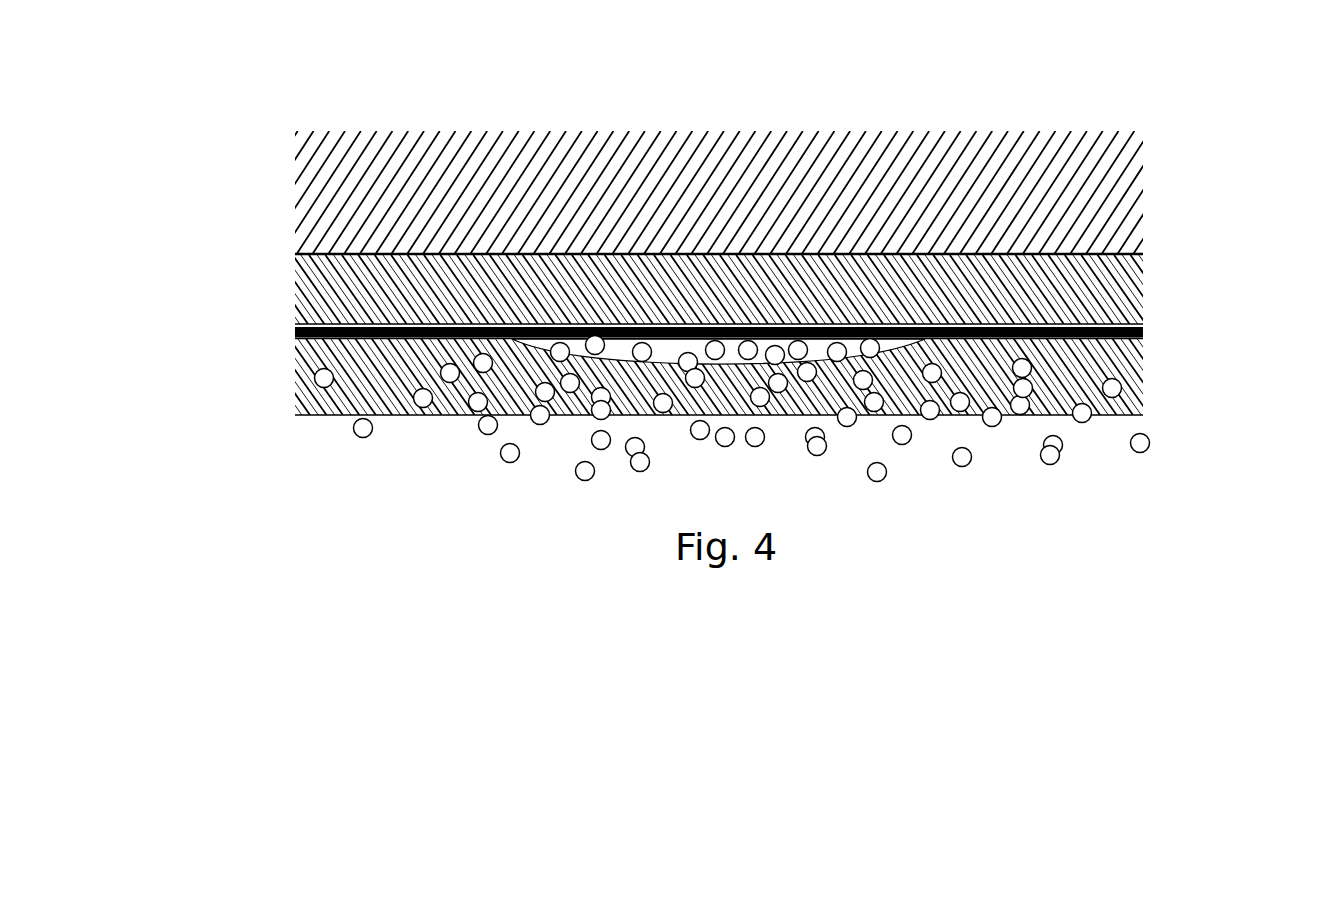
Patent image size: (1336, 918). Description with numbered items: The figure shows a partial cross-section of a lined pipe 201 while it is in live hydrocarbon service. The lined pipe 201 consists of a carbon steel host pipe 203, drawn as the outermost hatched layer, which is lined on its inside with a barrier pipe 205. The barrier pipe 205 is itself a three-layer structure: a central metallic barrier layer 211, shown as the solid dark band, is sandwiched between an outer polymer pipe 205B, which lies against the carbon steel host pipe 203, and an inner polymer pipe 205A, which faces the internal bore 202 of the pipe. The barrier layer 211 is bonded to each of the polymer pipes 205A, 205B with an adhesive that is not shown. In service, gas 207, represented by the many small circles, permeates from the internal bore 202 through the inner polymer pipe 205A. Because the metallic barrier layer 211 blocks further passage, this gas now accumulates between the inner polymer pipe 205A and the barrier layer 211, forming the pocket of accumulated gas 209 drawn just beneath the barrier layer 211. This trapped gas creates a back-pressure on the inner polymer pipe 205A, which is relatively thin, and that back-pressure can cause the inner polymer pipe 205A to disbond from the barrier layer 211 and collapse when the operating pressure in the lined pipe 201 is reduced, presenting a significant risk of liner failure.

The lined pipe 201 is at (1112, 90).
The internal bore 202 is at (1147, 466).
The carbon steel host pipe 203 is at (1127, 173).
The barrier pipe 205 is at (734, 326).
The inner polymer pipe 205A is at (1130, 370).
The outer polymer pipe 205B is at (1130, 295).
The gas 207 is at (877, 355).
The accumulated gas 209 is at (665, 347).
The barrier layer 211 is at (320, 327).